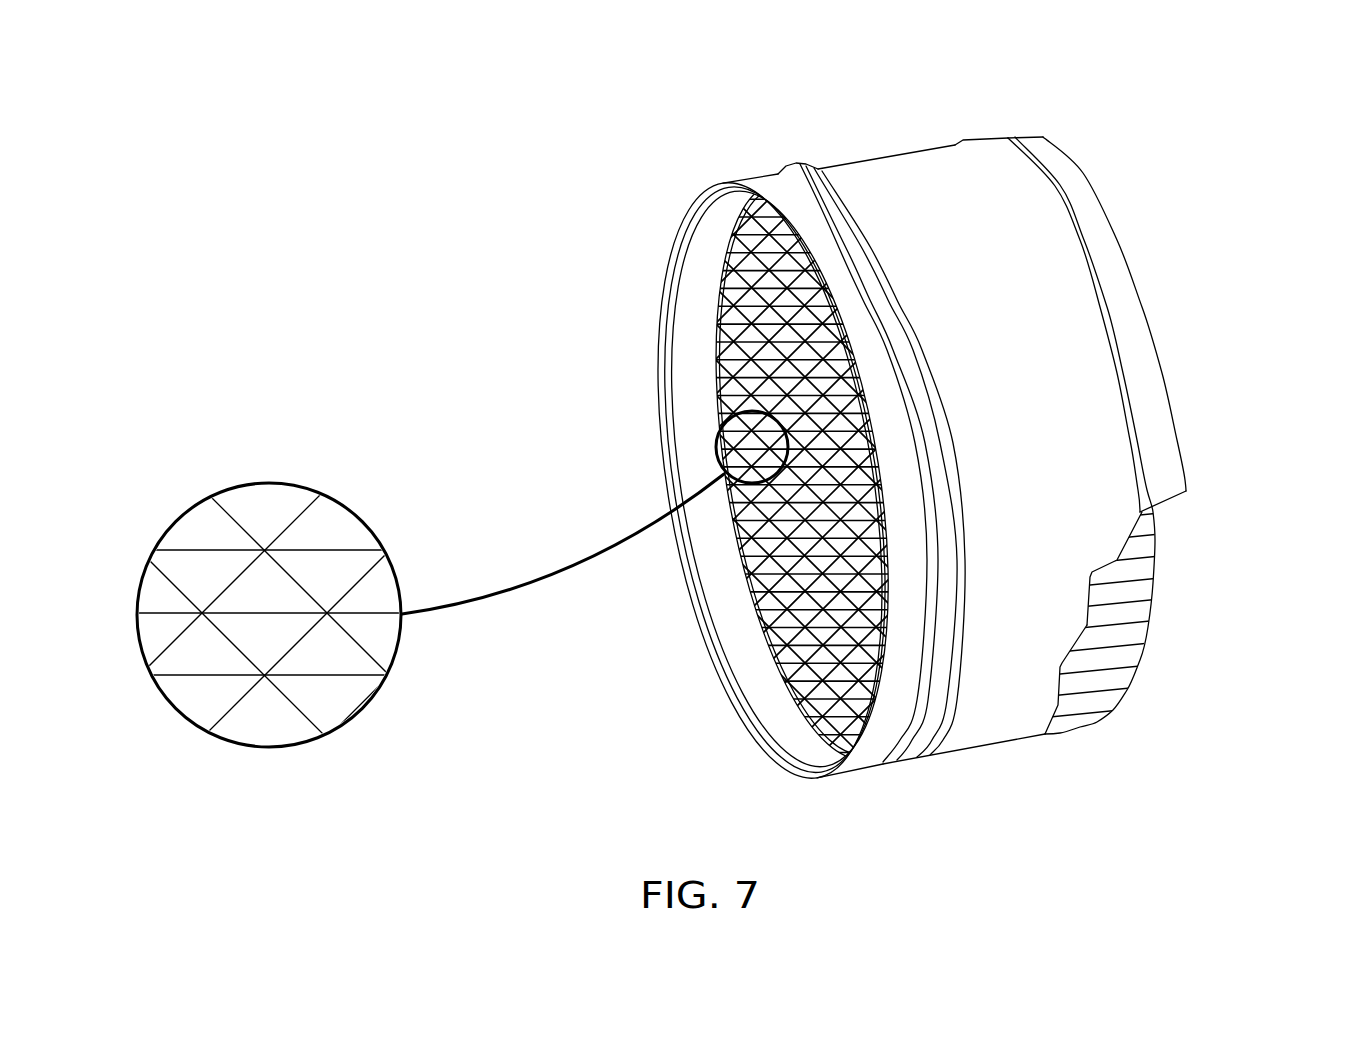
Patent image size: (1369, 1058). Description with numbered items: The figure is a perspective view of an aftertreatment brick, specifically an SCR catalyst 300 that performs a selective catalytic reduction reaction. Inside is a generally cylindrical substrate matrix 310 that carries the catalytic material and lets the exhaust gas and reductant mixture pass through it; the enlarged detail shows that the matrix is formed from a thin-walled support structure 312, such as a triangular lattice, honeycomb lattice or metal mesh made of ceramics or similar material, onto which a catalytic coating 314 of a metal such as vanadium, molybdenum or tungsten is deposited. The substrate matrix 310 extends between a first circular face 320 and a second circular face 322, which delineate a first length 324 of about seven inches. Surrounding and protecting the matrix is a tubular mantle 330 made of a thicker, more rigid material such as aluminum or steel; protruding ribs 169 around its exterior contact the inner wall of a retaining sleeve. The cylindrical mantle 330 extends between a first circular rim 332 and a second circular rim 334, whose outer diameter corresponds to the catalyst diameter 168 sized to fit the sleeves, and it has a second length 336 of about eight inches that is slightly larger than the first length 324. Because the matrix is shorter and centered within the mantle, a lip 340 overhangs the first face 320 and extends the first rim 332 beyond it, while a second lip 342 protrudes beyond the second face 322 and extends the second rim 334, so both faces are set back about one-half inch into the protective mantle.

The SCR catalyst 300 is at (624, 138).
The protruding ribs 169 is at (800, 163).
The tubular mantle 330 is at (1033, 240).
The first circular rim 332 is at (668, 262).
The second circular rim 334 is at (1177, 433).
The second lip 342 is at (1172, 493).
The second circular face 322 is at (1152, 628).
The substrate matrix 310 is at (1105, 648).
The first circular face 320 is at (772, 596).
The lip 340 is at (748, 658).
The catalyst diameter 168 is at (870, 767).
The second length 336 is at (1040, 145).
The first length 324 is at (865, 760).
The support structure 312 is at (273, 610).
The catalytic coating 314 is at (212, 668).